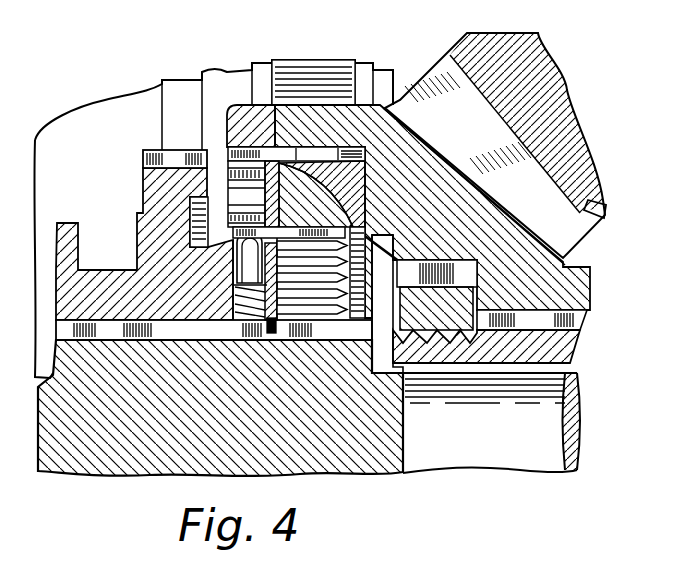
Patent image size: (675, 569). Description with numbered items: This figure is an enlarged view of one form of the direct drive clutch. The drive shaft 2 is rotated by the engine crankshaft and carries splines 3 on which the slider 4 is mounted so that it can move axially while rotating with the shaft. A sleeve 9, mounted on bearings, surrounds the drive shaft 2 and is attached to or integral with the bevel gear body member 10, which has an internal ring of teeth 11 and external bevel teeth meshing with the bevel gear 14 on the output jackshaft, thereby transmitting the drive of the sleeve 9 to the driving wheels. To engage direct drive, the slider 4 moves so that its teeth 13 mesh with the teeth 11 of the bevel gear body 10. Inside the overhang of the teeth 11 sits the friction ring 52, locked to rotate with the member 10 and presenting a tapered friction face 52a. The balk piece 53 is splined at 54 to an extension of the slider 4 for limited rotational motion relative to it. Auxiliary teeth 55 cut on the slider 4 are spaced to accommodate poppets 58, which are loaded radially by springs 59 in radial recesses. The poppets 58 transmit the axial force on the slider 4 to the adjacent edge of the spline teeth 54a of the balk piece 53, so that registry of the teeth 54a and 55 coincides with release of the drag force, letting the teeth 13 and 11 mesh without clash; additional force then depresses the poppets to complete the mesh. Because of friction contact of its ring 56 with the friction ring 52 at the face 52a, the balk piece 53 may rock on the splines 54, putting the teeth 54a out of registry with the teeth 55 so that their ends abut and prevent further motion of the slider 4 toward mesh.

The drive shaft 2 is at (57, 397).
The splines 3 is at (68, 332).
The slider 4 is at (150, 193).
The sleeve 9 is at (560, 341).
The bevel gear body member 10 is at (563, 258).
The internal ring of teeth 11 is at (227, 150).
The slider teeth 13 is at (145, 160).
The bevel gear 14 is at (582, 205).
The friction ring 52 is at (367, 167).
The tapered friction face 52a is at (296, 156).
The balk piece 53 is at (270, 228).
The splines 54 is at (314, 297).
The spline teeth of balk piece 54a is at (296, 194).
The auxiliary teeth 55 is at (217, 235).
The ring of balk piece 56 is at (366, 256).
The poppets 58 is at (220, 250).
The springs 59 is at (245, 322).